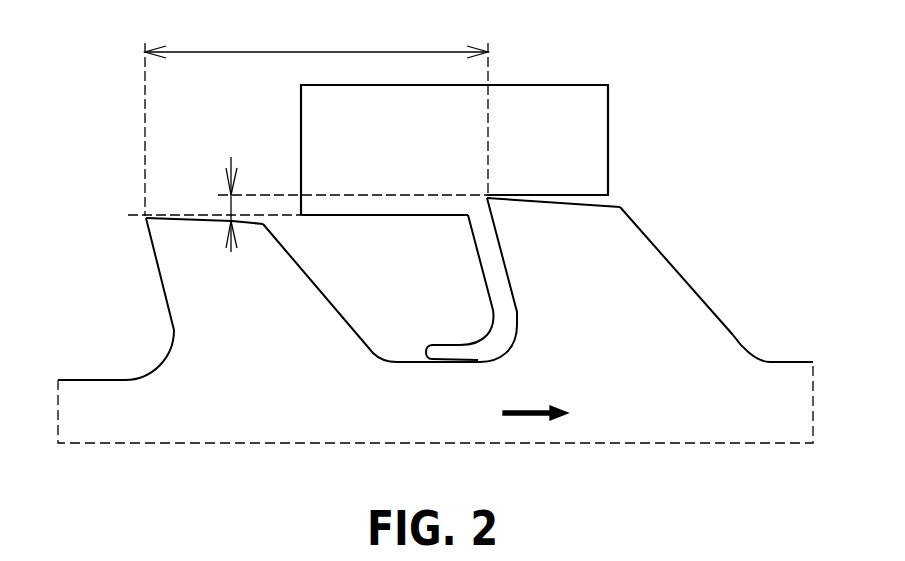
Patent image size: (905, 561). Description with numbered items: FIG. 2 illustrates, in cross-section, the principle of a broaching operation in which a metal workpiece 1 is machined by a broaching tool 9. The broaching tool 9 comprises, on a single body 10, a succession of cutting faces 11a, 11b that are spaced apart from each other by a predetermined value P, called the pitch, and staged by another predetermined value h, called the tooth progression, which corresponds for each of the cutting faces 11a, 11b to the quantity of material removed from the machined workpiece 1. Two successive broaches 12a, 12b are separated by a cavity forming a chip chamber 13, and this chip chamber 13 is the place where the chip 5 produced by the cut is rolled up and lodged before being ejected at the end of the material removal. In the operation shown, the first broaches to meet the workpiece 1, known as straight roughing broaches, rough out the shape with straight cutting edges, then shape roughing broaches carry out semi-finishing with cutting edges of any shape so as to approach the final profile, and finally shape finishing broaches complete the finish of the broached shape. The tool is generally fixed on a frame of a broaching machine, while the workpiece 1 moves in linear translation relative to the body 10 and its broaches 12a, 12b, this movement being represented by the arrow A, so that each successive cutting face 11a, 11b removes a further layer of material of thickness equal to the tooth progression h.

The metal workpiece 1 is at (333, 117).
The chip 5 is at (498, 267).
The broaching tool 9 is at (788, 325).
The body 10 is at (781, 402).
The cutting face 11a is at (134, 231).
The cutting face 11b is at (475, 217).
The broach 12a is at (212, 297).
The broach 12b is at (643, 283).
The chip chamber 13 is at (393, 322).
The arrow A is at (528, 407).
The pitch P is at (316, 121).
The tooth progression h is at (220, 205).